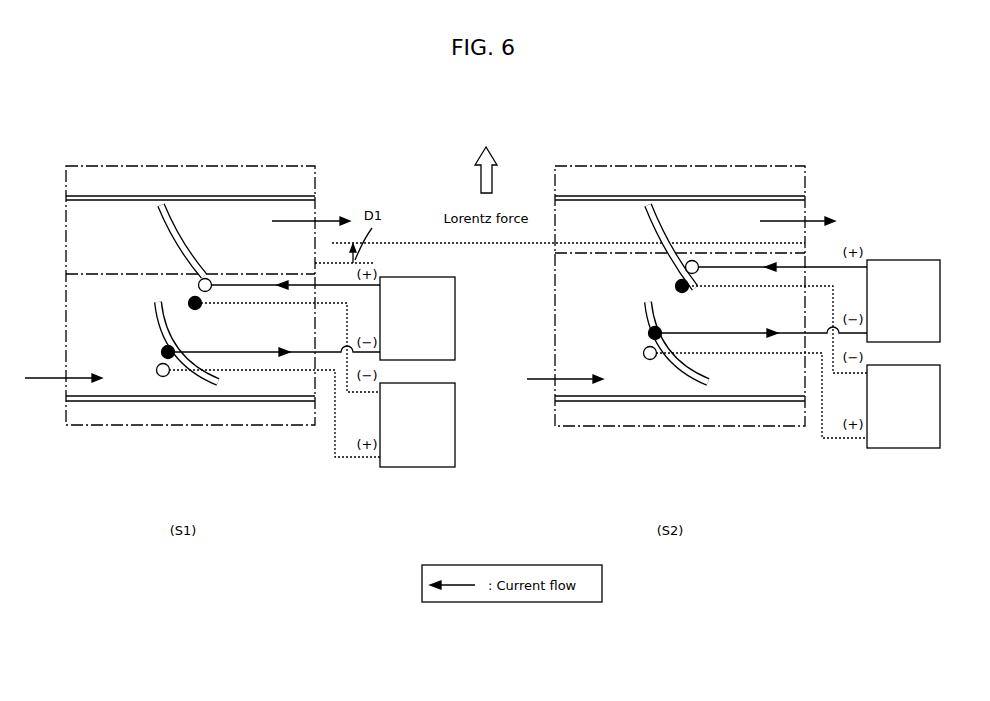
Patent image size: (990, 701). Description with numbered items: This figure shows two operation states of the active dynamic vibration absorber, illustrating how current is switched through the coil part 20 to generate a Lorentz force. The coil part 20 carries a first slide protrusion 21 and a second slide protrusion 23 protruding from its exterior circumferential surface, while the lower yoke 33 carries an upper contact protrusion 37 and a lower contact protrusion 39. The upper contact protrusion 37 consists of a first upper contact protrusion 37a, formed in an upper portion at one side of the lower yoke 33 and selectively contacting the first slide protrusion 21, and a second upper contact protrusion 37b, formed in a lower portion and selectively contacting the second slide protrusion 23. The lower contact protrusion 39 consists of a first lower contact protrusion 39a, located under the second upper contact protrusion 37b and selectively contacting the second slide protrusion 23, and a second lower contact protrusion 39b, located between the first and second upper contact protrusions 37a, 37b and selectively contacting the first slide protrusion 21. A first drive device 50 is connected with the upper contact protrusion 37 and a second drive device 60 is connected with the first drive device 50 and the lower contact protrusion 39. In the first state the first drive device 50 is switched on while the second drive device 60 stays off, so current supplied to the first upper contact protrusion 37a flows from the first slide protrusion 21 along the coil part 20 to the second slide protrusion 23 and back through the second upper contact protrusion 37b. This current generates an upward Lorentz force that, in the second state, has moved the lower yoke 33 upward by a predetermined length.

The coil part 20 is at (97, 208).
The first slide protrusion 21 is at (150, 203).
The second slide protrusion 23 is at (220, 385).
The lower yoke 33 is at (562, 323).
The upper contact protrusion 37 is at (430, 209).
The first upper contact protrusion 37a is at (207, 278).
The second upper contact protrusion 37b is at (158, 300).
The lower contact protrusion 39 is at (427, 401).
The first lower contact protrusion 39a is at (164, 377).
The second lower contact protrusion 39b is at (196, 310).
The first drive device 50 is at (456, 318).
The second drive device 60 is at (456, 425).